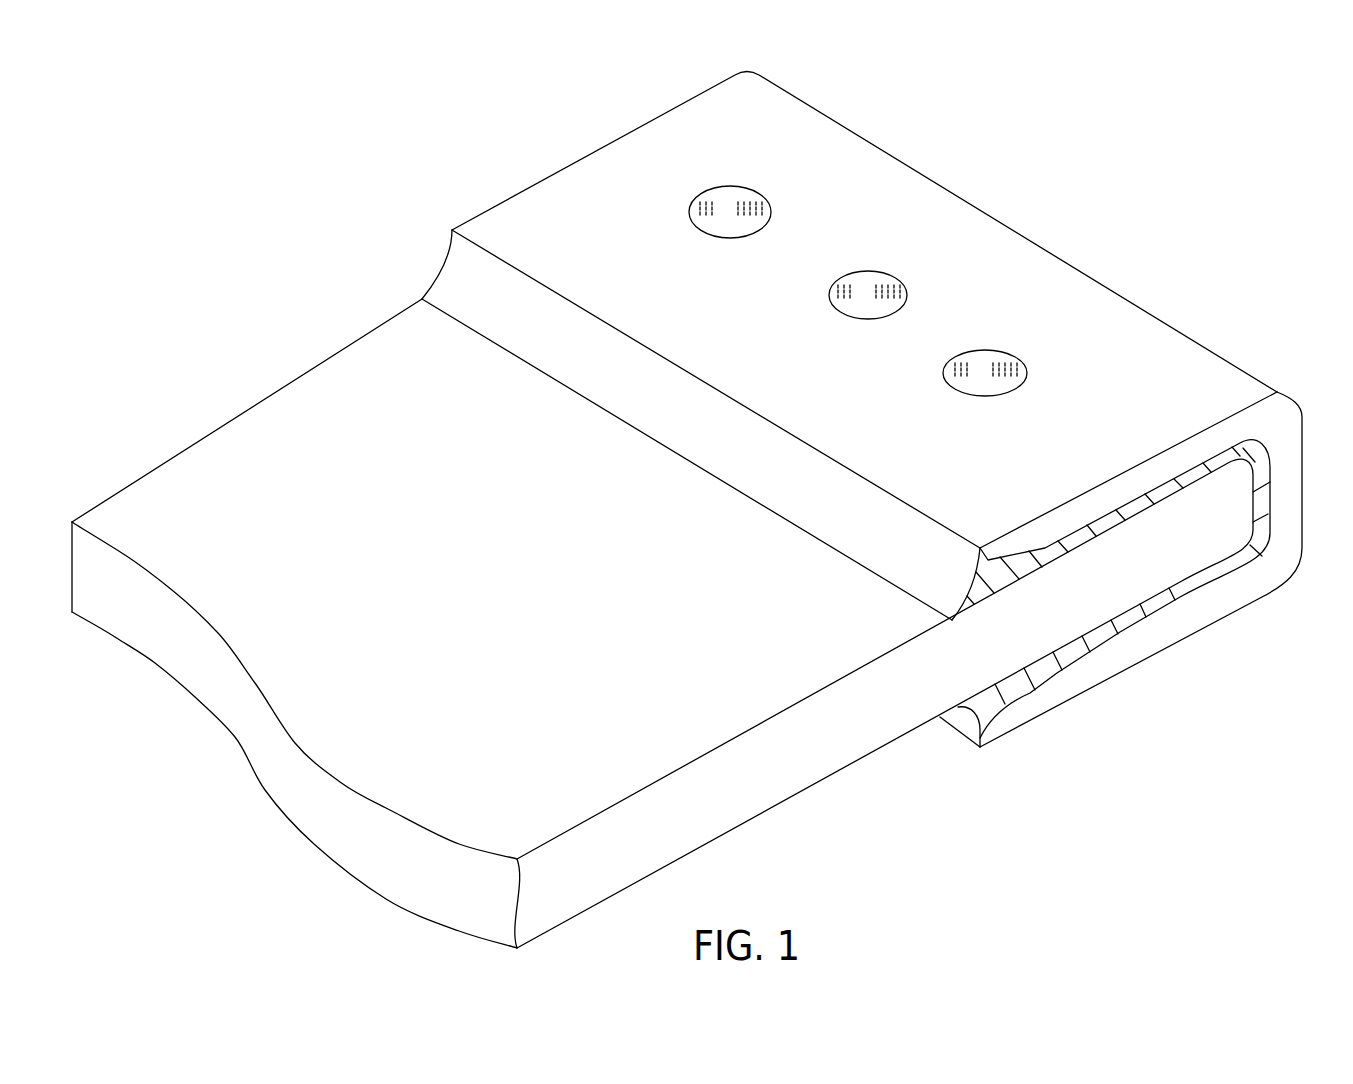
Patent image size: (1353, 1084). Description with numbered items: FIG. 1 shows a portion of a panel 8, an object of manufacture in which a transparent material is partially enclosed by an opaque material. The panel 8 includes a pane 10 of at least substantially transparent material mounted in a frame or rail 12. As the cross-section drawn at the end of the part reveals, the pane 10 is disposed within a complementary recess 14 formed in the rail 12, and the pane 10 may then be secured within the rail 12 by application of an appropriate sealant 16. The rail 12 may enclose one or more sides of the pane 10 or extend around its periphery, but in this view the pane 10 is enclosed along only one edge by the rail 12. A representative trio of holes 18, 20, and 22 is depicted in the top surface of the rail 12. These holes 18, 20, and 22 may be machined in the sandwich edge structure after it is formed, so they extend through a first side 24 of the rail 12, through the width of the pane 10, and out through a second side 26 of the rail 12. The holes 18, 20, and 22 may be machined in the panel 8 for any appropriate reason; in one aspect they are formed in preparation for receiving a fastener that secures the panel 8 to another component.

The panel 8 is at (338, 116).
The pane 10 is at (288, 383).
The rail 12 is at (1147, 302).
The recess 14 is at (1272, 498).
The sealant 16 is at (1093, 653).
The hole 18 is at (693, 213).
The hole 20 is at (870, 272).
The hole 22 is at (982, 350).
The first side 24 is at (1180, 352).
The second side 26 is at (1165, 633).